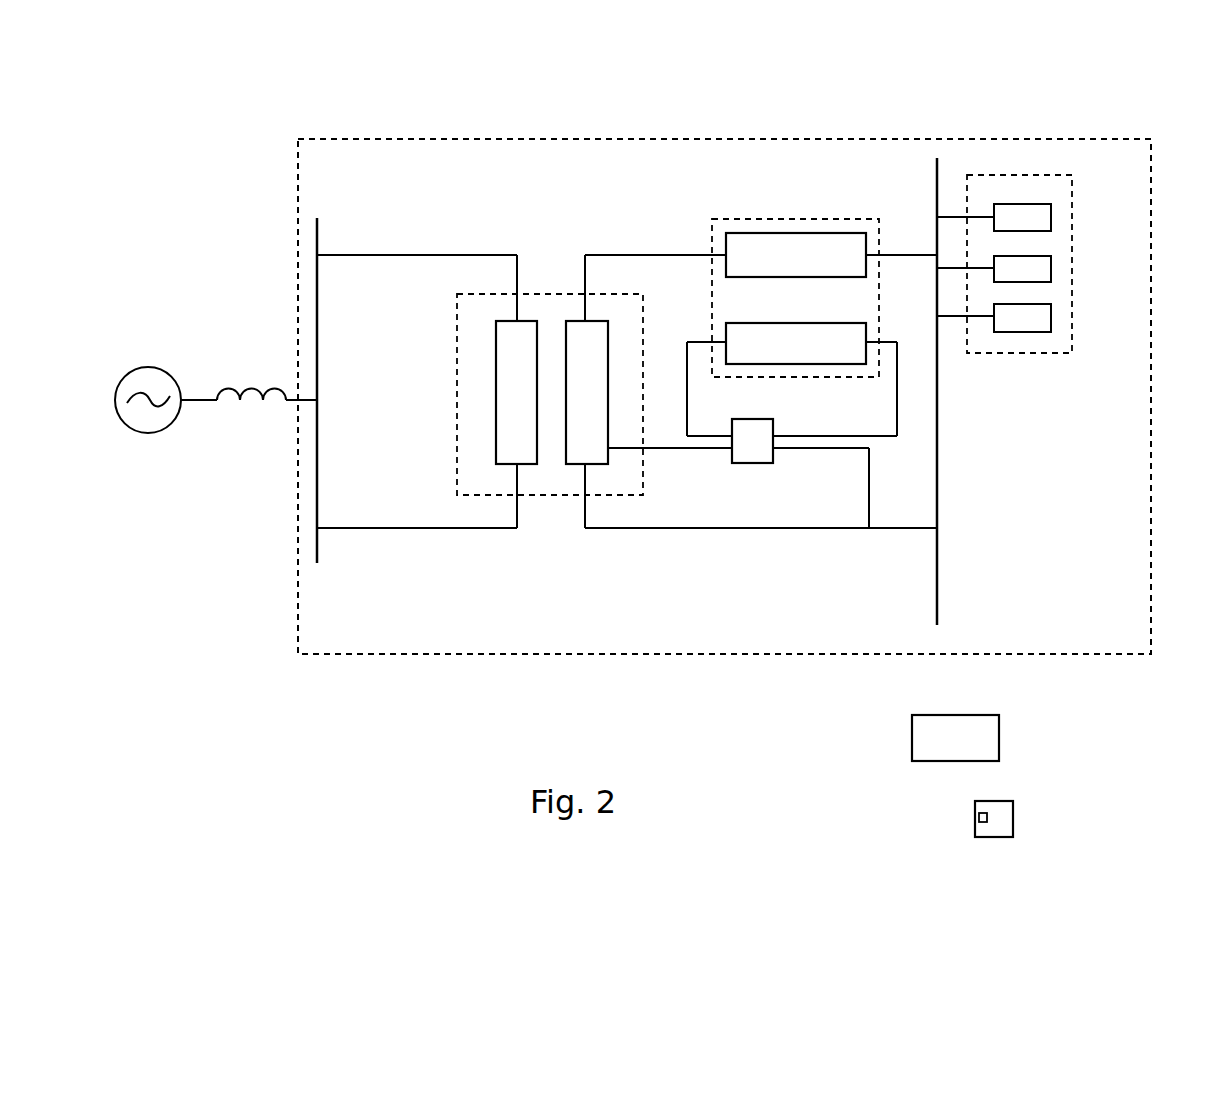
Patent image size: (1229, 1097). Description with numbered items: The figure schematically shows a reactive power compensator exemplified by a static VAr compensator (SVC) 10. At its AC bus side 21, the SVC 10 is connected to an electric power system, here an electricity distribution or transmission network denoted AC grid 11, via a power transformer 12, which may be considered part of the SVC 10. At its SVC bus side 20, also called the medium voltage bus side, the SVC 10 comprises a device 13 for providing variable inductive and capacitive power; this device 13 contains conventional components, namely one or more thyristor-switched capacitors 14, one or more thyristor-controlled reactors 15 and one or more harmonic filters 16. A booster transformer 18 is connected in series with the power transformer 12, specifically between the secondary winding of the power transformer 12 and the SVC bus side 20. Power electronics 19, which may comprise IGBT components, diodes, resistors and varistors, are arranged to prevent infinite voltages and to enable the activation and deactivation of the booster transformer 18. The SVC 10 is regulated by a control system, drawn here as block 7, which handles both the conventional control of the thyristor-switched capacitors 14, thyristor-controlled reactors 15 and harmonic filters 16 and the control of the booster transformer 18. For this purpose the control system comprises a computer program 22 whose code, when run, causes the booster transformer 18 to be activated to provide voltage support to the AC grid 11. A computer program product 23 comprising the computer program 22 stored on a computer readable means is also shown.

The control system 7 is at (991, 722).
The static VAr compensator 10 is at (1113, 90).
The AC grid 11 is at (148, 367).
The power transformer 12 is at (545, 306).
The device for providing variable inductive and capacitive power 13 is at (1051, 229).
The thyristor-switched capacitor 14 is at (1049, 211).
The thyristor-controlled reactor 15 is at (1049, 263).
The harmonic filter 16 is at (1049, 318).
The booster transformer 18 is at (840, 223).
The power electronics 19 is at (757, 452).
The SVC bus side 20 is at (937, 189).
The AC bus side 21 is at (317, 234).
The computer program 22 is at (976, 818).
The computer program product 23 is at (1005, 812).